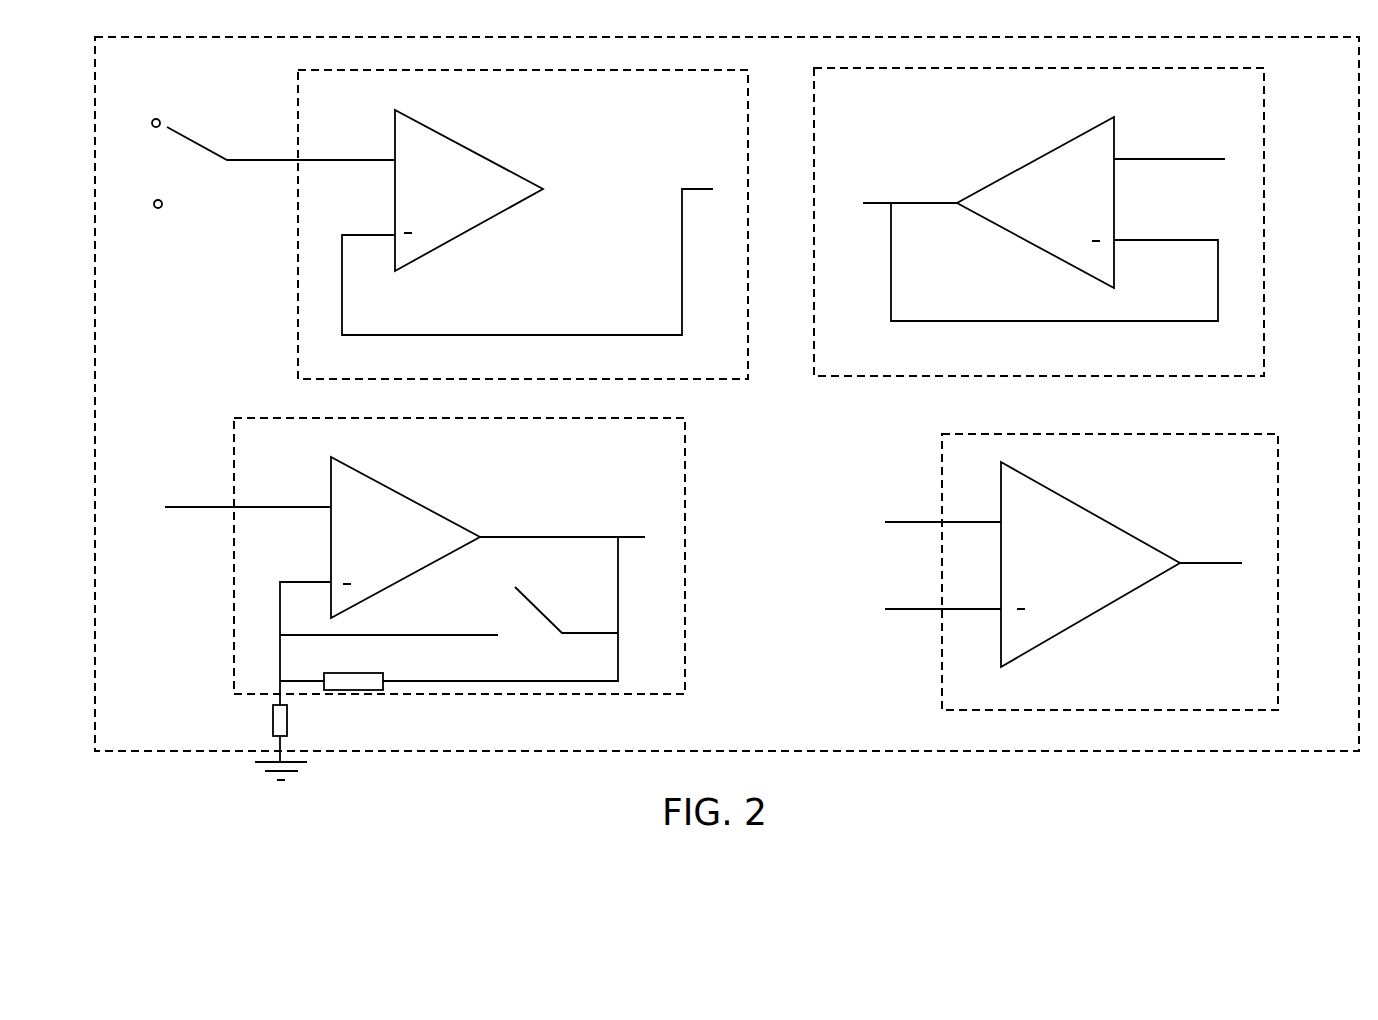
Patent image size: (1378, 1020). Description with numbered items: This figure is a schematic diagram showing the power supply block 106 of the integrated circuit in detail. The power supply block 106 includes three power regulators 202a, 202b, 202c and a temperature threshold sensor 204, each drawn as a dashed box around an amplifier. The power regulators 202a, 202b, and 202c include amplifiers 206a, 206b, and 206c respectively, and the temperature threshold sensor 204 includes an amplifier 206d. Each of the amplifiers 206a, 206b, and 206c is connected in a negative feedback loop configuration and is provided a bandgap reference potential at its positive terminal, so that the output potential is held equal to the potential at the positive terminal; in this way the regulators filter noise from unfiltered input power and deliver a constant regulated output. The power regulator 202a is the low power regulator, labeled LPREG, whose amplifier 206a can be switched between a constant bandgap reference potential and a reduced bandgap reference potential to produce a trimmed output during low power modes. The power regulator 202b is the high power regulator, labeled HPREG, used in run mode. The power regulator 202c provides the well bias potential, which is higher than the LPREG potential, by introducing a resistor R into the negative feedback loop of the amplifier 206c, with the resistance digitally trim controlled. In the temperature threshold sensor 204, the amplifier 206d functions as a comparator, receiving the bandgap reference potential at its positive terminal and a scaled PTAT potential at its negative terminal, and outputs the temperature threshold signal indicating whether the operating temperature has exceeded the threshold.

The power supply block 106 is at (138, 794).
The power regulator 202a is at (298, 335).
The power regulator 202b is at (1266, 218).
The power regulator 202c is at (687, 583).
The temperature threshold sensor 204 is at (1280, 615).
The amplifier 206a is at (453, 140).
The amplifier 206b is at (1042, 158).
The amplifier 206c is at (394, 490).
The amplifier 206d is at (1048, 484).